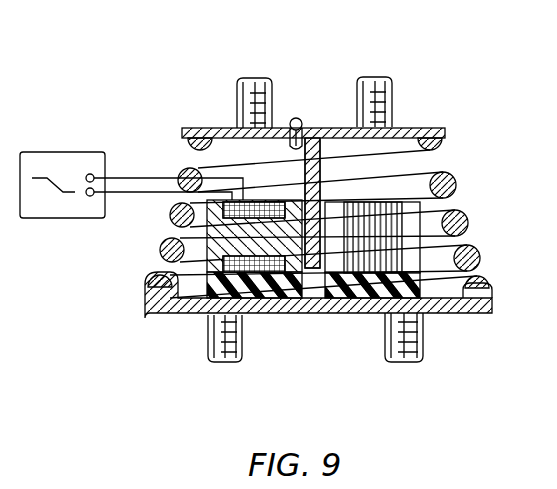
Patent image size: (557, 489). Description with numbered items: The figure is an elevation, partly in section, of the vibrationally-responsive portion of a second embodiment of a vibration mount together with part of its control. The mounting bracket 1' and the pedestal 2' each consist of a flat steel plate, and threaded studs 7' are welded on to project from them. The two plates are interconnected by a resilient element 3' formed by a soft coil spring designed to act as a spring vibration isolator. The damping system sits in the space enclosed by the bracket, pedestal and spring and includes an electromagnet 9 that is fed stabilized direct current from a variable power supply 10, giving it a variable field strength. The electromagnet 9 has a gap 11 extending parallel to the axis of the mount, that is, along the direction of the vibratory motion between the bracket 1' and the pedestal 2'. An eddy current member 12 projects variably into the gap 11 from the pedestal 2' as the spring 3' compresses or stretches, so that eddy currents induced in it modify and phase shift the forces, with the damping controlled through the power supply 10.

The variable power supply 10 is at (60, 158).
The pedestal 2' is at (310, 103).
The eddy current member 12 is at (313, 163).
The threaded studs 7' is at (279, 202).
The resilient element 3' is at (347, 218).
The mounting bracket 1' is at (318, 323).
The gap 11 is at (316, 287).
The electromagnet 9 is at (206, 232).